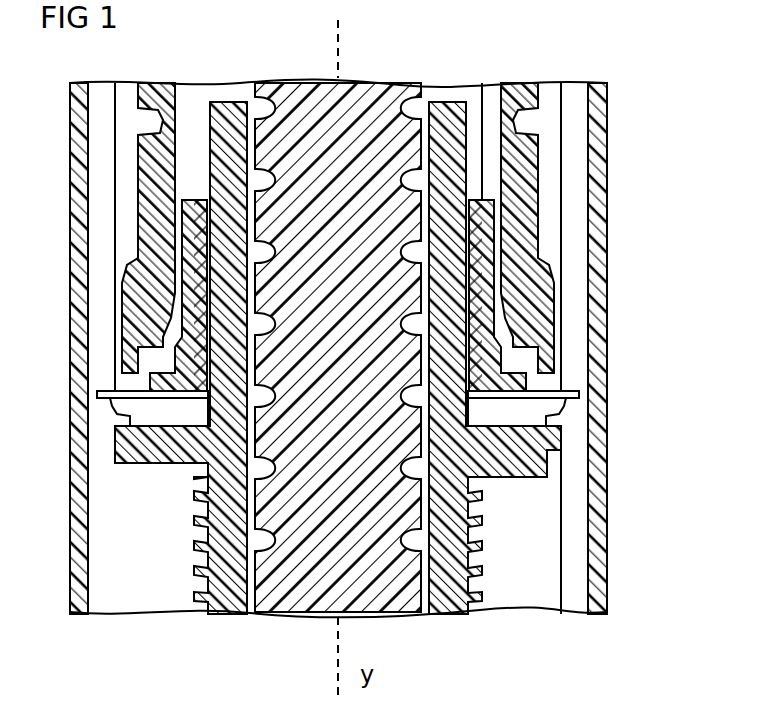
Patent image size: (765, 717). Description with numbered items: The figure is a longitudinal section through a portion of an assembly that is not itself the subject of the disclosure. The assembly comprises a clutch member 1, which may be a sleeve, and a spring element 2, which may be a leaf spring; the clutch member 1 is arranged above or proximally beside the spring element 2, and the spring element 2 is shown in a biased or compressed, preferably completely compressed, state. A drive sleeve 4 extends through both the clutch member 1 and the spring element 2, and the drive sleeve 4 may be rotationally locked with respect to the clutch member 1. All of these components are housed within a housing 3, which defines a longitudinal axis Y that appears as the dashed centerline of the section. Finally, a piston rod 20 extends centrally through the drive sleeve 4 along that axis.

The clutch member 1 is at (193, 237).
The spring element 2 is at (113, 404).
The housing 3 is at (598, 205).
The drive sleeve 4 is at (455, 480).
The piston rod 20 is at (375, 568).